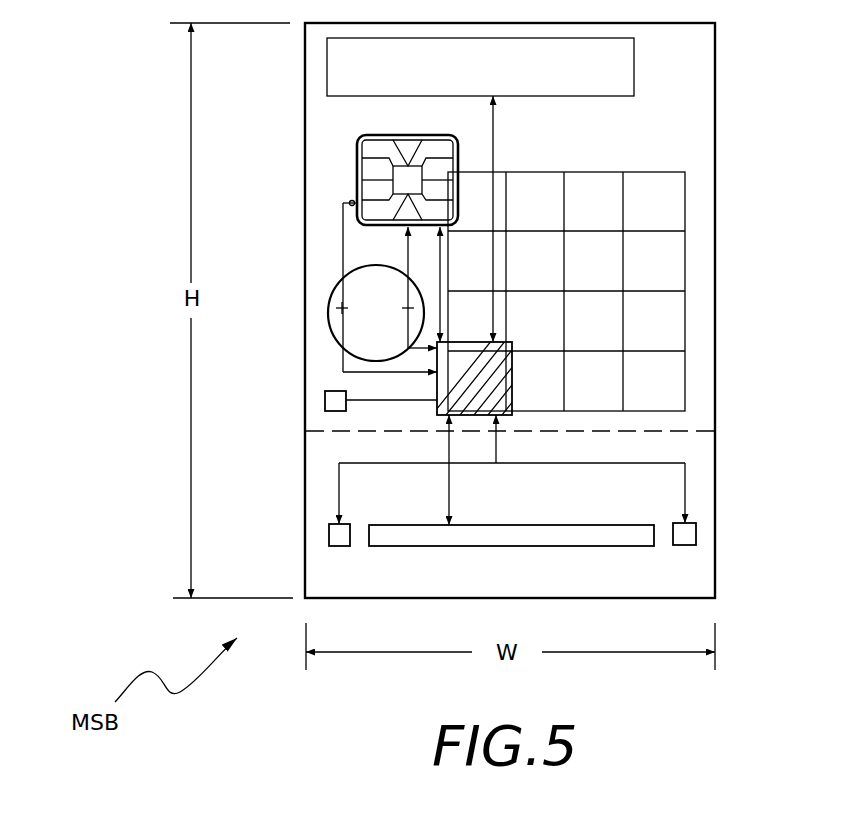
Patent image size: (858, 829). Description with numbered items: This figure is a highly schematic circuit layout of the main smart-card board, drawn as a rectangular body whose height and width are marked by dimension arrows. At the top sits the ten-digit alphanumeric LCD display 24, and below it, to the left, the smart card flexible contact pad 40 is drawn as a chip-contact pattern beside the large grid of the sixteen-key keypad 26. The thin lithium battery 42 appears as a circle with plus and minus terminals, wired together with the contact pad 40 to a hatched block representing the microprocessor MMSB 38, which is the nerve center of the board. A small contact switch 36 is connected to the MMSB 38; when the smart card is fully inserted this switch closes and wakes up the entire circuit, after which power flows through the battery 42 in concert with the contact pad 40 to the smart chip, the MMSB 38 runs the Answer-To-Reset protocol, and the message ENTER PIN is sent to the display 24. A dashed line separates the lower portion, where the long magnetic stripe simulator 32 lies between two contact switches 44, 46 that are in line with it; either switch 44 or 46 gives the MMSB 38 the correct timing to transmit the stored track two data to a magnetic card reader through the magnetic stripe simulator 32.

The alphanumeric LCD display 24 is at (484, 81).
The keypad 26 is at (690, 273).
The magnetic stripe simulator 32 is at (515, 537).
The contact switch 36 is at (333, 405).
The microprocessor MMSB 38 is at (502, 383).
The smart card flexible contact pad 40 is at (342, 178).
The thin lithium battery 42 is at (368, 290).
The contact switch 44 is at (685, 533).
The contact switch 46 is at (340, 537).